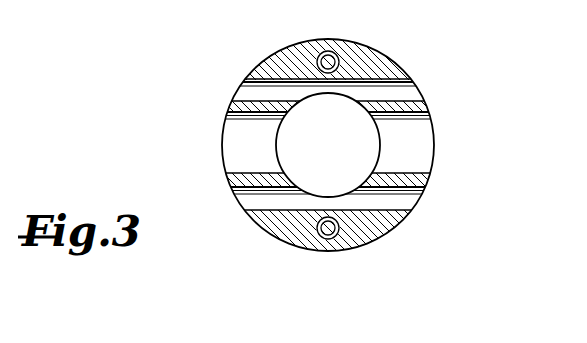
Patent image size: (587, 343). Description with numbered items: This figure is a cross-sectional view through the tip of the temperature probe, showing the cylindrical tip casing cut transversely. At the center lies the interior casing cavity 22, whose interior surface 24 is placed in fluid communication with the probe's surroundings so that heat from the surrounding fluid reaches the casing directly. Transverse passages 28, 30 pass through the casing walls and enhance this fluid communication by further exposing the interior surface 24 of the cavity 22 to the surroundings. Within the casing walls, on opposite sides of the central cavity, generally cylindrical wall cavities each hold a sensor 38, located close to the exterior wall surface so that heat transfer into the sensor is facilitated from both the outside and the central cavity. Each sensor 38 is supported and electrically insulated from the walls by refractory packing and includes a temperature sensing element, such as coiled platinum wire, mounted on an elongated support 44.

The interior casing cavity 22 is at (297, 139).
The interior surface 24 is at (338, 100).
The transverse passage 28 is at (413, 93).
The transverse passage 30 is at (423, 149).
The sensor 38 is at (334, 56).
The elongated support 44 is at (171, 9).